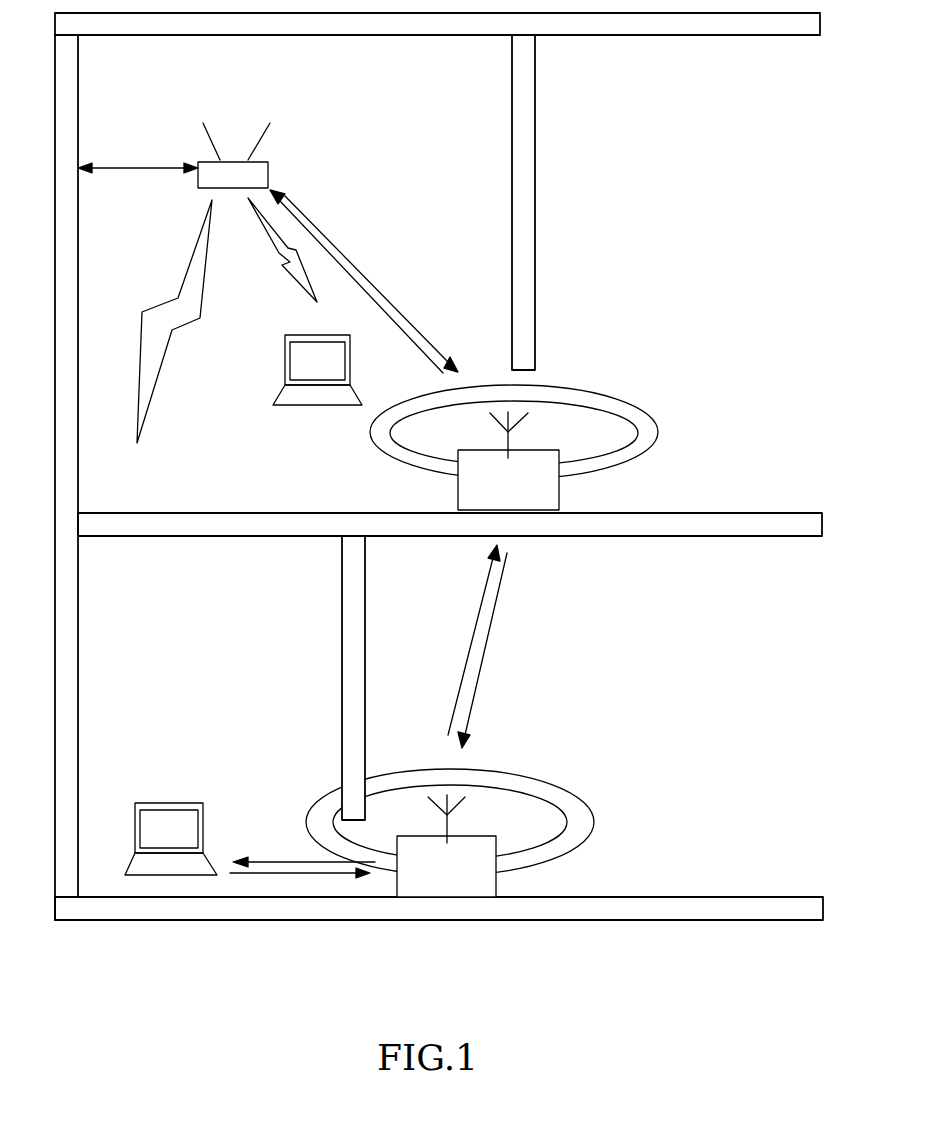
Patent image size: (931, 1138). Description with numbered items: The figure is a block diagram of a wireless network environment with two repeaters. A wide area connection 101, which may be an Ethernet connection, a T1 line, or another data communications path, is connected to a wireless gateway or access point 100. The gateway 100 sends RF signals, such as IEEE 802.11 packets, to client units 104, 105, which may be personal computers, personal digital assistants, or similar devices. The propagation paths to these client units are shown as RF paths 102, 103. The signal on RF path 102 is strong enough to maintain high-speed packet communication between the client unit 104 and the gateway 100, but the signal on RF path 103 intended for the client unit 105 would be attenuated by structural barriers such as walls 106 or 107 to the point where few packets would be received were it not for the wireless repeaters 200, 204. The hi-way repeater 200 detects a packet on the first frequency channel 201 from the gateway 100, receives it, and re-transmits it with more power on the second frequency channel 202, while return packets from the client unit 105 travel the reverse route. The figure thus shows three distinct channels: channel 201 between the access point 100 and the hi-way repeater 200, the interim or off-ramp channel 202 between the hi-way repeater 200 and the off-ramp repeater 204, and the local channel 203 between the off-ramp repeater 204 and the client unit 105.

The wireless gateway 100 is at (268, 168).
The wide area connection 101 is at (128, 167).
The RF path 102 is at (284, 265).
The RF path 103 is at (160, 304).
The client unit 104 is at (285, 352).
The client unit 105 is at (162, 795).
The wall 106 is at (193, 513).
The wall 107 is at (365, 620).
The wireless repeater 200 is at (559, 490).
The first frequency channel 201 is at (380, 258).
The second frequency channel 202 is at (495, 618).
The local channel 203 is at (287, 847).
The off-ramp repeater 204 is at (496, 877).